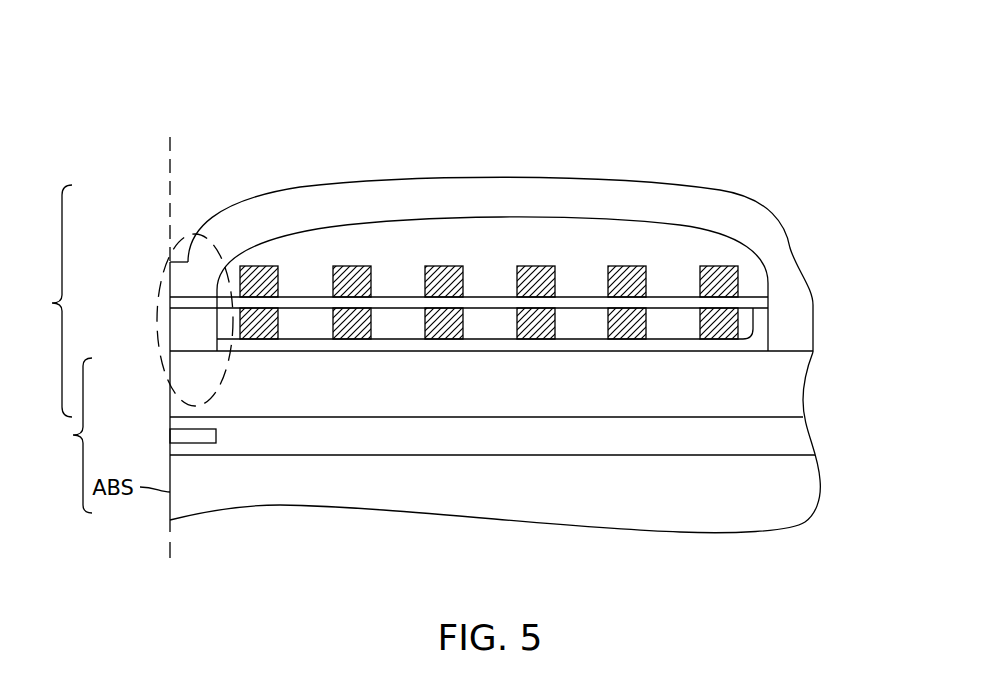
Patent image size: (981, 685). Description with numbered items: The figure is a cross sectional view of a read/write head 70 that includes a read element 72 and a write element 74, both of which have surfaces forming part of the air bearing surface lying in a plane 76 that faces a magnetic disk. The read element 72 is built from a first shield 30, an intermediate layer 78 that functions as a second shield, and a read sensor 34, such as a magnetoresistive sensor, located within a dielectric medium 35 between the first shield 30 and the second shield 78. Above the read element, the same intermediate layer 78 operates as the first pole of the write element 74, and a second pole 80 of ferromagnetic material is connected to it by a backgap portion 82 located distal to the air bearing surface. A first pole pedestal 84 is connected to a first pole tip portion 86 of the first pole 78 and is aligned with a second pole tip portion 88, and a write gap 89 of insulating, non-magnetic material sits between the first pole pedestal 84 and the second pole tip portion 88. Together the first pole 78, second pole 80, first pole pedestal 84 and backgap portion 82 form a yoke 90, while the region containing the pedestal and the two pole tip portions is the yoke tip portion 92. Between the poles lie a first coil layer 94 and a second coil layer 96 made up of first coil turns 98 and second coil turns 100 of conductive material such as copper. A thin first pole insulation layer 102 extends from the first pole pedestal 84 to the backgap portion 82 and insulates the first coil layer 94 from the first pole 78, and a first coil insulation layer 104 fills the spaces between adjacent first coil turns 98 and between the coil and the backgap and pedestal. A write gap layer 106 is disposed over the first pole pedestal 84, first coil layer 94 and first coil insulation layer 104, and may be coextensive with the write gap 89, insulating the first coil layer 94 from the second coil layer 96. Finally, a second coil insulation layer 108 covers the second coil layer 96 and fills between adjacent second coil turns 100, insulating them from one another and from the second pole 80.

The read/write head 70 is at (692, 88).
The read element 72 is at (67, 435).
The write element 74 is at (47, 301).
The plane 76 is at (170, 165).
The intermediate layer 78 is at (787, 390).
The second pole 80 is at (718, 219).
The backgap portion 82 is at (792, 325).
The first pole pedestal 84 is at (182, 333).
The first pole tip portion 86 is at (182, 378).
The second pole tip portion 88 is at (183, 273).
The write gap 89 is at (178, 303).
The yoke 90 is at (790, 220).
The yoke tip portion 92 is at (165, 243).
The first coil layer 94 is at (762, 320).
The second coil layer 96 is at (762, 277).
The first coil turns 98 is at (706, 338).
The second coil turns 100 is at (717, 278).
The first pole insulation layer 102 is at (462, 343).
The first coil insulation layer 104 is at (308, 330).
The write gap layer 106 is at (574, 300).
The second coil insulation layer 108 is at (488, 245).
The read sensor 34 is at (175, 432).
The dielectric medium 35 is at (792, 433).
The first shield 30 is at (758, 510).